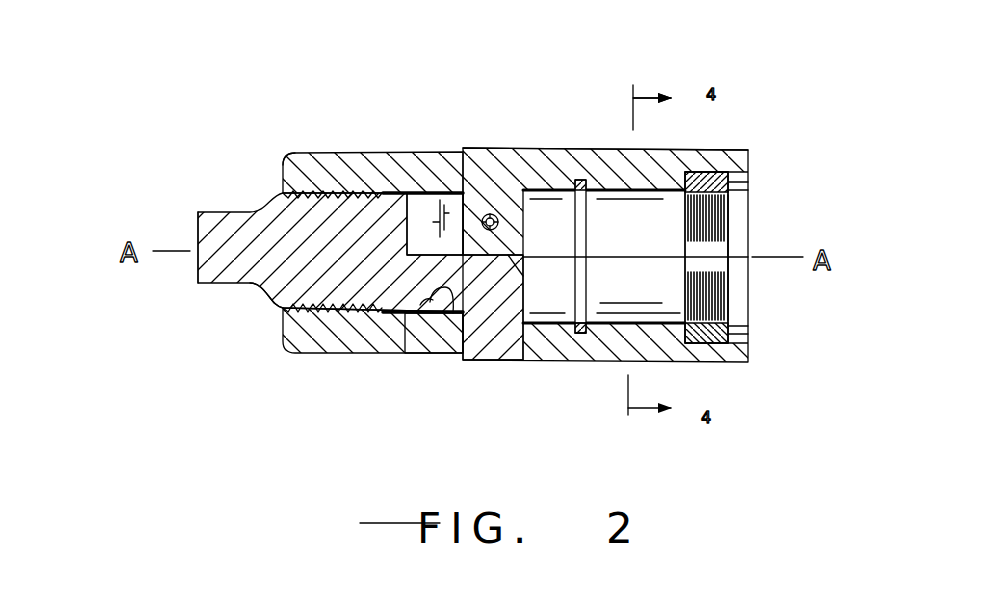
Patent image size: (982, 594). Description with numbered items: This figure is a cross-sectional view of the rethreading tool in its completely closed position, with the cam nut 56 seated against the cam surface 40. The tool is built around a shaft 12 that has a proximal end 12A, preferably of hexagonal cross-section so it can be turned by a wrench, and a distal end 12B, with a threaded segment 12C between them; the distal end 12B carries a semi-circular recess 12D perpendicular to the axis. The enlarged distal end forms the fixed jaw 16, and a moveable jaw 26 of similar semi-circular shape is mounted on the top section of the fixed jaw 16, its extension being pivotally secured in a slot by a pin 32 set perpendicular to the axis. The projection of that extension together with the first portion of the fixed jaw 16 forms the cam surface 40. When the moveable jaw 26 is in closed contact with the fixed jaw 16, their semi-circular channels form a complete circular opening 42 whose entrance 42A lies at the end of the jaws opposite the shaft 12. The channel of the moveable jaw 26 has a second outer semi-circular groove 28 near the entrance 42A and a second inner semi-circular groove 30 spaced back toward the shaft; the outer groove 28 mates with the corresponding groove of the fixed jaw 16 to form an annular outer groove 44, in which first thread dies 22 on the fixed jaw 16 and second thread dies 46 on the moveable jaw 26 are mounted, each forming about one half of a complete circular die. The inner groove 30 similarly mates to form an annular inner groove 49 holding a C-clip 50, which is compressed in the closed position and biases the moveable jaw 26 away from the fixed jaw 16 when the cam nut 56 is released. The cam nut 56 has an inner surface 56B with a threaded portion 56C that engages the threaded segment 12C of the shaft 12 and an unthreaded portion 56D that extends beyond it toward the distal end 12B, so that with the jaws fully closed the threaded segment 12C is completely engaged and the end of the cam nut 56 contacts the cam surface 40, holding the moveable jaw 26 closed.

The shaft 12 is at (273, 262).
The proximal end 12A is at (233, 270).
The distal end 12B is at (390, 310).
The threaded segment 12C is at (320, 313).
The semi-circular recess 12D is at (440, 190).
The fixed jaw 16 is at (540, 343).
The first thread dies 22 is at (725, 344).
The moveable jaw 26 is at (648, 152).
The second outer semi-circular groove 28 is at (712, 170).
The second inner semi-circular groove 30 is at (584, 179).
The pin 32 is at (493, 213).
The cam surface 40 is at (450, 316).
The complete circular opening 42 is at (656, 241).
The entrance 42A is at (741, 242).
The annular outer groove 44 is at (715, 353).
The second thread dies 46 is at (730, 171).
The annular inner groove 49 is at (577, 338).
The C-clip 50 is at (583, 335).
The cam nut 56 is at (320, 152).
The inner surface 56B is at (450, 325).
The threaded portion 56C is at (312, 178).
The unthreaded portion 56D is at (403, 157).